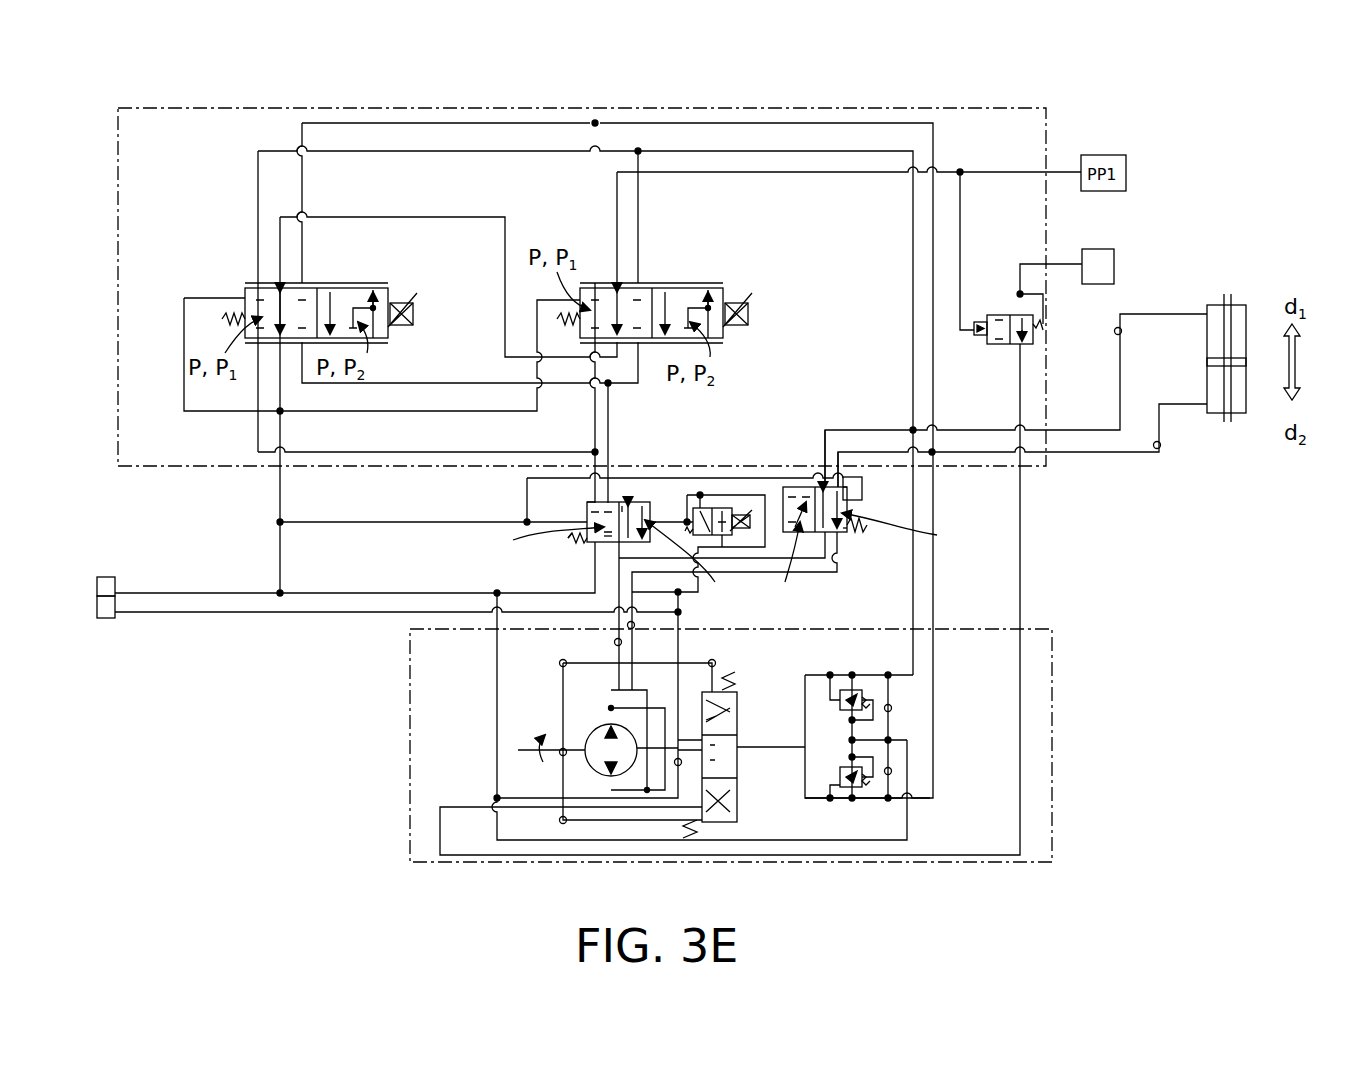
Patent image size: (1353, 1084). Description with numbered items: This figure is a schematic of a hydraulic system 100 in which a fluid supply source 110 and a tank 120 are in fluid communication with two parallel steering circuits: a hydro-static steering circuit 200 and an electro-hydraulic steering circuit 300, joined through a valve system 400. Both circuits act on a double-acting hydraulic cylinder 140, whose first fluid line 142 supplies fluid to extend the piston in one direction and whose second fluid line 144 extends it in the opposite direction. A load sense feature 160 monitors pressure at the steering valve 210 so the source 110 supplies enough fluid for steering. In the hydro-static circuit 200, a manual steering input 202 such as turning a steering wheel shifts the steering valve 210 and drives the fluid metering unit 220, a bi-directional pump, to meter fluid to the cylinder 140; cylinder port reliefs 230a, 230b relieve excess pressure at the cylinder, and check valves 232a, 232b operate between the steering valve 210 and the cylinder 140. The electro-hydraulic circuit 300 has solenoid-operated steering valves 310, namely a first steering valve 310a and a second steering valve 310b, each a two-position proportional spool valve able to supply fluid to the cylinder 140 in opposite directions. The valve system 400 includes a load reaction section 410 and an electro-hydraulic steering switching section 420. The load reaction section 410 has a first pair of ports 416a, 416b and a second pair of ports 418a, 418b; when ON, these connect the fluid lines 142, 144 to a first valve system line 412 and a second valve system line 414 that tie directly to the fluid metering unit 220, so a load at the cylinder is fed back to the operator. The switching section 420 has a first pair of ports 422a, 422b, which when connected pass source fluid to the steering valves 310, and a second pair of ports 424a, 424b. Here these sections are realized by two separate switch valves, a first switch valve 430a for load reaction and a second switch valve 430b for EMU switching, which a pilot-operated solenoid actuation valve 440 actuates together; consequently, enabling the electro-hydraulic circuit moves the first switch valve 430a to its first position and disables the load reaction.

The hydraulic system 100 is at (1231, 65).
The fluid supply source 110 is at (110, 620).
The tank 120 is at (115, 575).
The hydraulic cylinder 140 is at (1207, 305).
The first fluid line 142 is at (1122, 330).
The second fluid line 144 is at (1161, 445).
The load sense feature 160 is at (1093, 252).
The hydro-static steering circuit 200 is at (1050, 648).
The manual steering input 202 is at (543, 740).
The steering valve 210 is at (745, 690).
The fluid metering unit 220 is at (588, 735).
The first cylinder port relief 230a is at (858, 688).
The second cylinder port relief 230b is at (862, 800).
The first check valve 232a is at (892, 708).
The second check valve 232b is at (892, 771).
The electro-hydraulic steering circuit 300 is at (1054, 129).
The steering valves 310 is at (471, 280).
The first steering valve 310a is at (247, 284).
The second steering valve 310b is at (678, 286).
The valve system 400 is at (470, 573).
The load reaction section 410 is at (805, 485).
The first valve system line 412 is at (615, 644).
The second valve system line 414 is at (633, 628).
The first port of first pair of ports 416a is at (845, 493).
The second port of first pair of ports 416b is at (845, 533).
The first port of second pair of ports 418a is at (825, 486).
The second port of second pair of ports 418b is at (835, 535).
The electro-hydraulic steering switching section 420 is at (633, 485).
The first port of first pair of ports of EMU switching section 422a is at (627, 492).
The second port of first pair of ports of EMU switching section 422b is at (607, 543).
The first port of second pair of ports of EMU switching section 424a is at (587, 503).
The second port of second pair of ports of EMU switching section 424b is at (583, 538).
The first switch valve 430a is at (837, 487).
The second switch valve 430b is at (590, 502).
The actuation valve 440 is at (707, 505).